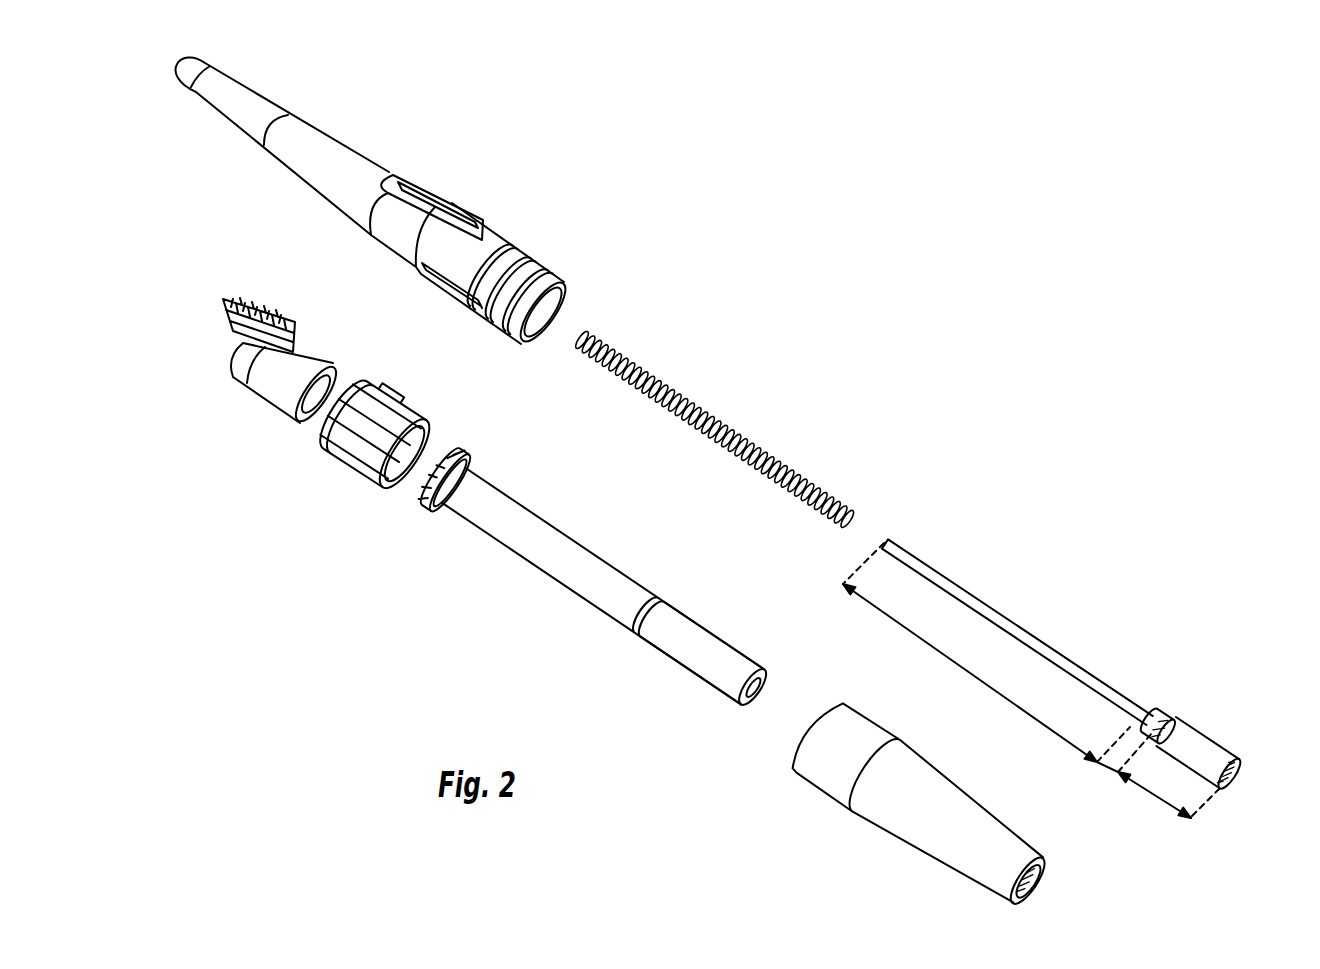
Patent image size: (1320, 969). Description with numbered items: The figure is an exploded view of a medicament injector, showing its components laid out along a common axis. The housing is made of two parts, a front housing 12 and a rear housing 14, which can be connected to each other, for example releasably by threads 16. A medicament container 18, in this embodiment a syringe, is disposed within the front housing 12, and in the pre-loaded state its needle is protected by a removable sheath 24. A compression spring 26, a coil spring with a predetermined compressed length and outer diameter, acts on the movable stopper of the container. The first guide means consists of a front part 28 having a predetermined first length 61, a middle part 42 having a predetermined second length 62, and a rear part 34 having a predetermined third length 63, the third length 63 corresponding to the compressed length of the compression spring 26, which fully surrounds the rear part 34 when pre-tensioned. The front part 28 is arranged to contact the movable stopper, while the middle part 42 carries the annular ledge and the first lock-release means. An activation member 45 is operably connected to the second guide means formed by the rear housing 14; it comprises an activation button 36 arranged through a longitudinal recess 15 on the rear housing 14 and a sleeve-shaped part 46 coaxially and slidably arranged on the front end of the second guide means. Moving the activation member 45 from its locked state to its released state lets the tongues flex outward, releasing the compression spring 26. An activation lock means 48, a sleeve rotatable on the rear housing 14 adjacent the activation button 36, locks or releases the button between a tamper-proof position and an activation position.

The front housing 12 is at (965, 830).
The rear housing 14 is at (313, 162).
The longitudinal recess 15 is at (437, 207).
The threads 16 is at (540, 281).
The medicament container 18 is at (562, 576).
The removable sheath 24 is at (701, 663).
The compression spring 26 is at (736, 440).
The front part 28 is at (1213, 764).
The rear part 34 is at (1040, 646).
The activation button 36 is at (262, 332).
The middle part 42 is at (1152, 725).
The activation member 45 is at (217, 357).
The sleeve-shaped part 46 is at (294, 390).
The activation lock means 48 is at (365, 472).
The first length 61 is at (1150, 800).
The second length 62 is at (1107, 774).
The third length 63 is at (944, 663).